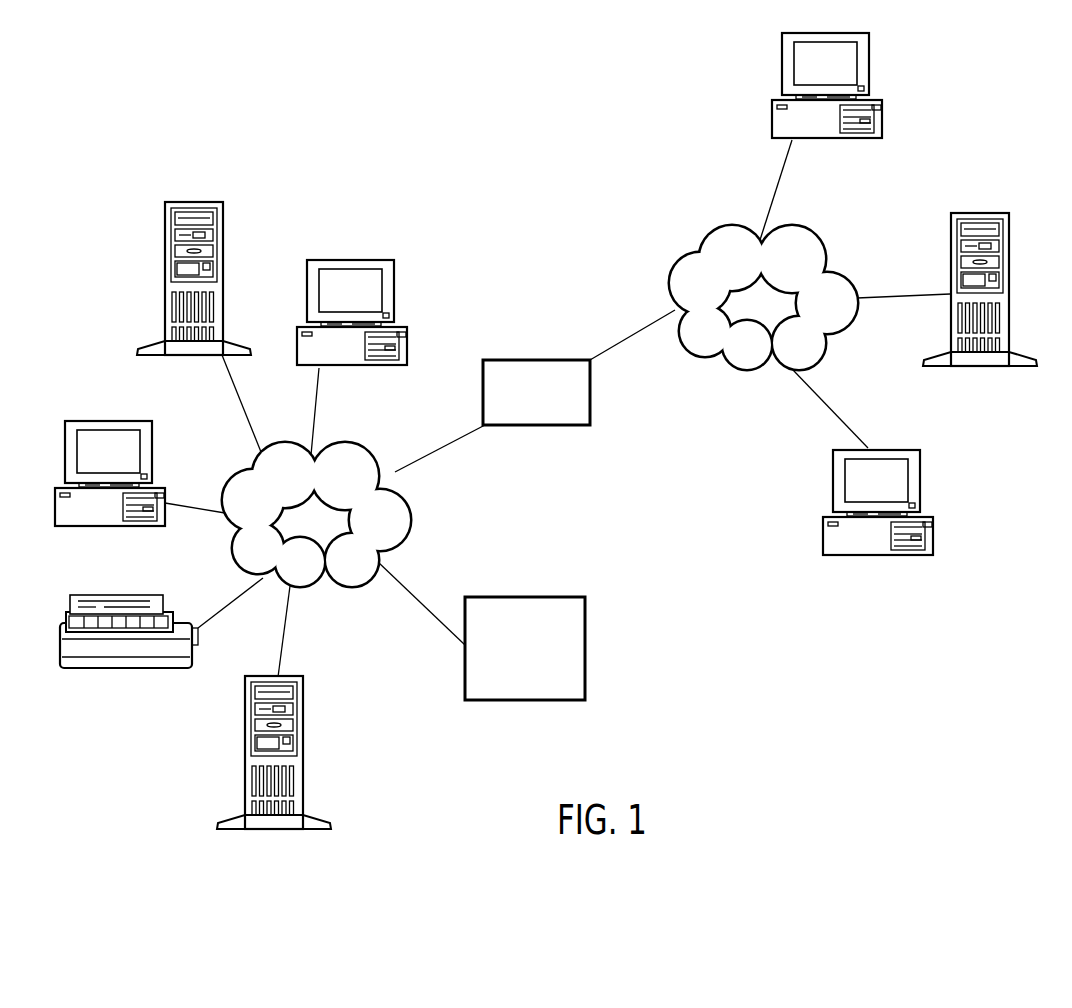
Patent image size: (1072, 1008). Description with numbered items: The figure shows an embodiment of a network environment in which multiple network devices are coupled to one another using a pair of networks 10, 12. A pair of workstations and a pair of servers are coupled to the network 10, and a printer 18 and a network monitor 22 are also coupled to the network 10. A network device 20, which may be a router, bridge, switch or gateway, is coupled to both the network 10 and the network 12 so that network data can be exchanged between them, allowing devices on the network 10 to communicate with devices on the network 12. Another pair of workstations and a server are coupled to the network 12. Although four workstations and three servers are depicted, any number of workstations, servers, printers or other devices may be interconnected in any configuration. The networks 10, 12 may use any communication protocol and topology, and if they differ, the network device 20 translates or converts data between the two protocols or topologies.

The network 10 is at (408, 500).
The network 12 is at (713, 232).
The printer 18 is at (77, 668).
The network device 20 is at (592, 403).
The network monitor 22 is at (587, 648).